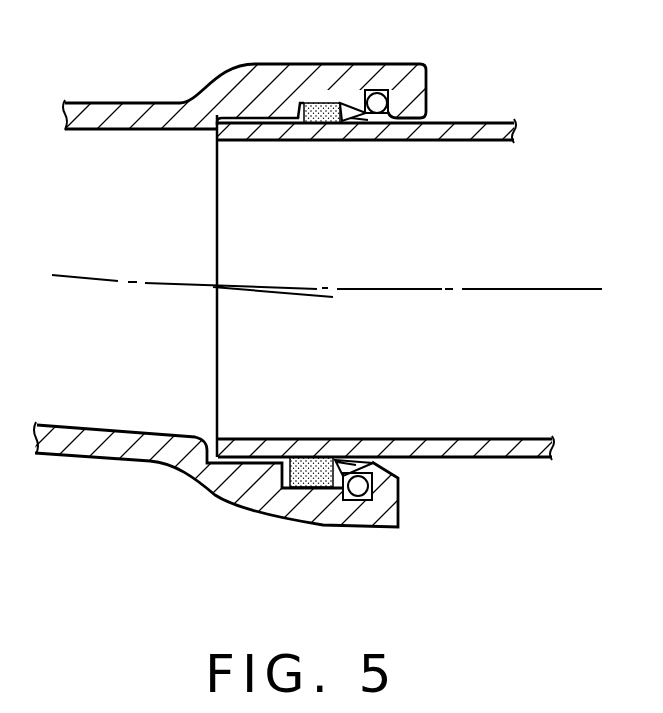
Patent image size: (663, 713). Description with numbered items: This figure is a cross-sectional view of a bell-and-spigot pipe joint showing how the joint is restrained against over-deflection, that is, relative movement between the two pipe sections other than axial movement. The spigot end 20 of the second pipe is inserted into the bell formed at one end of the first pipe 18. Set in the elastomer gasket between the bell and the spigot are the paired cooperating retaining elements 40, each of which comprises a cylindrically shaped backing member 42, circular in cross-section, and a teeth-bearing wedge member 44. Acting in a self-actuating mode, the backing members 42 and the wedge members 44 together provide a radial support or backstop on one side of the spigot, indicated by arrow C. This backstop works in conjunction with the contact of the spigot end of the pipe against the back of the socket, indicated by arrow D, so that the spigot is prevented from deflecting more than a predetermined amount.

The first pipe 18 is at (135, 460).
The spigot end 20 is at (472, 122).
The paired cooperating retaining elements 40 is at (377, 91).
The backing member 42 is at (358, 496).
The wedge member 44 is at (338, 472).
The arrow C is at (358, 420).
The arrow D is at (192, 152).